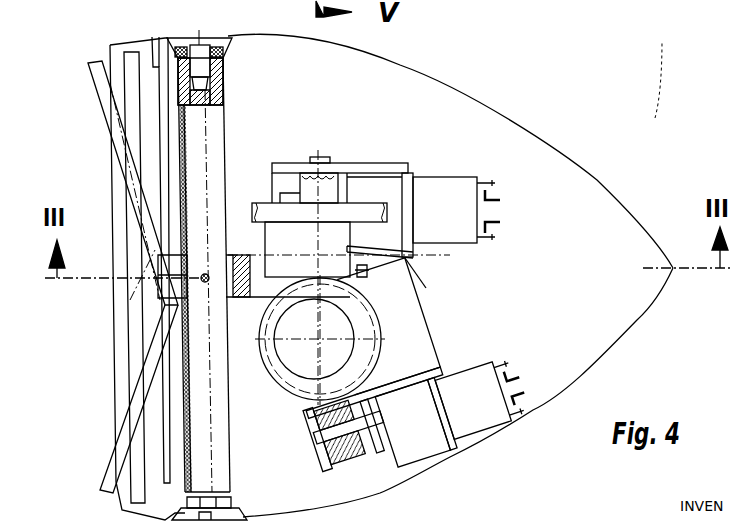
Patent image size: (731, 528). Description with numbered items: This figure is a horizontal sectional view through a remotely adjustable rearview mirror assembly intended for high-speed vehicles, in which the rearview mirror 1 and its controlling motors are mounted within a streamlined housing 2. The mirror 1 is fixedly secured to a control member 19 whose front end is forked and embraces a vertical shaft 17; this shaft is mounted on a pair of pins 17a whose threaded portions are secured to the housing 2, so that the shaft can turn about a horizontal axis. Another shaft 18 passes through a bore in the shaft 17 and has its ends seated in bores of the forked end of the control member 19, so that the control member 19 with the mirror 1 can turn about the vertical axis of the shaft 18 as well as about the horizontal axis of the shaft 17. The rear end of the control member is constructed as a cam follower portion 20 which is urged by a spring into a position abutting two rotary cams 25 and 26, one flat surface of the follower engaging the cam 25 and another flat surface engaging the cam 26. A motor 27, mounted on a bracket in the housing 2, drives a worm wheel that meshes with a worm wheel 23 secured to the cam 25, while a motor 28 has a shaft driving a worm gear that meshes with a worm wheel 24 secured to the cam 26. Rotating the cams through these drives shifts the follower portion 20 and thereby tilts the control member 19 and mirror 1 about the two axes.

The rearview mirror 1 is at (126, 278).
The streamlined housing 2 is at (553, 144).
The vertical shaft 17 is at (214, 262).
The pins 17a is at (212, 38).
The shaft 18 is at (200, 281).
The control member 19 is at (172, 263).
The cam follower portion 20 is at (241, 256).
The worm wheel 23 is at (350, 212).
The worm wheel 24 is at (378, 330).
The rotary cam 25 is at (338, 238).
The rotary cam 26 is at (290, 353).
The motor 27 is at (428, 193).
The motor 28 is at (482, 380).